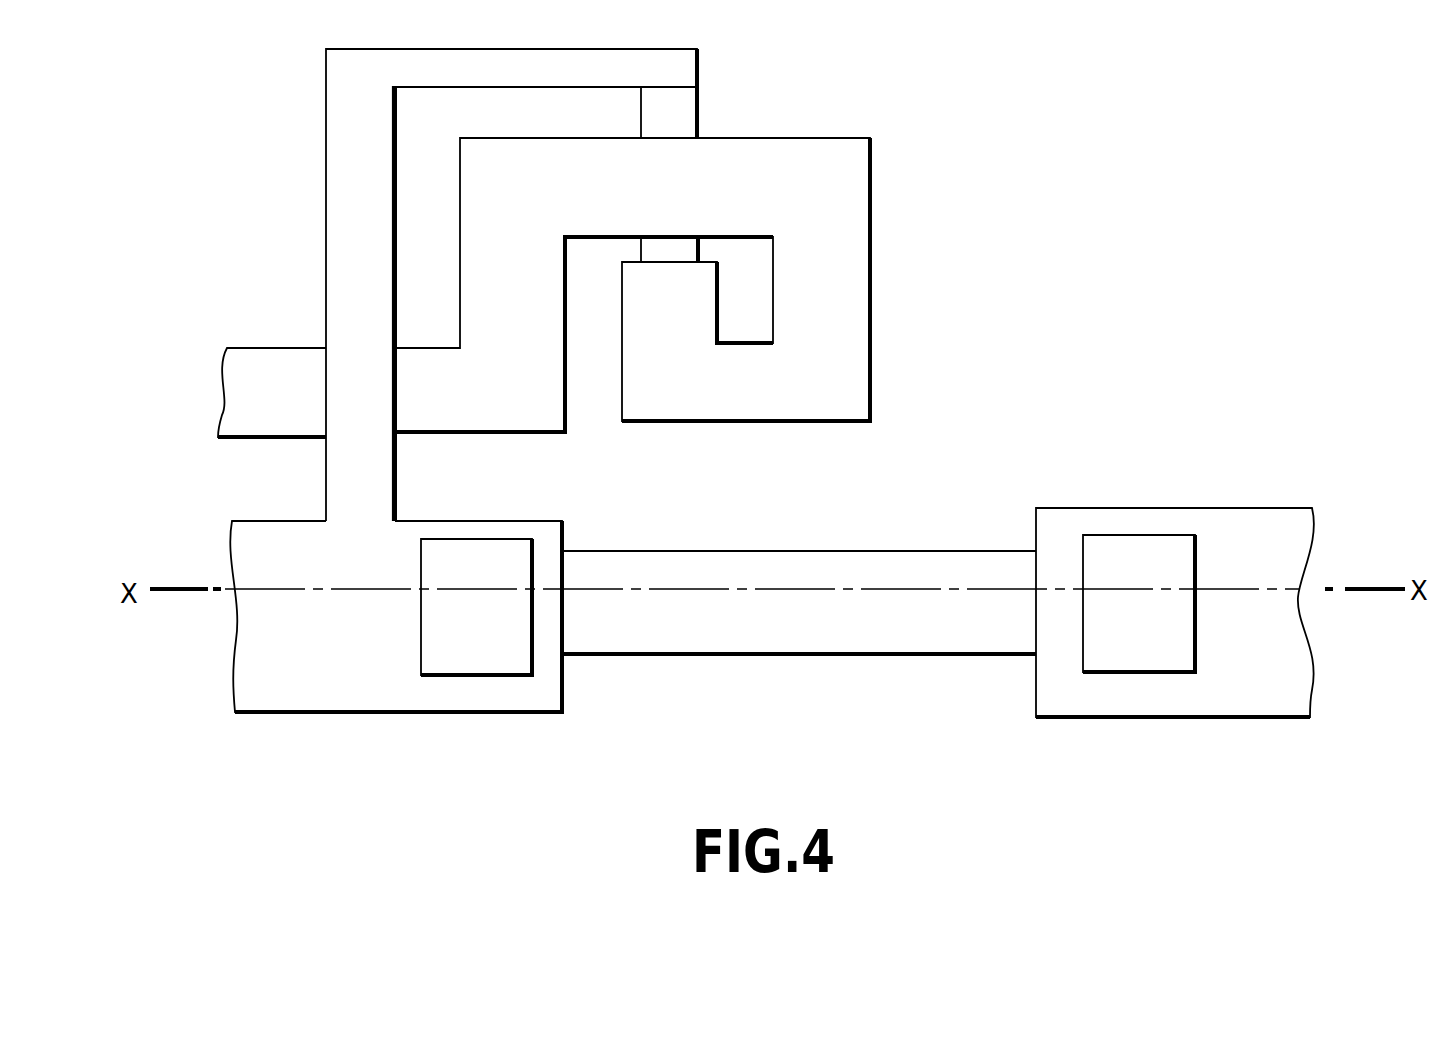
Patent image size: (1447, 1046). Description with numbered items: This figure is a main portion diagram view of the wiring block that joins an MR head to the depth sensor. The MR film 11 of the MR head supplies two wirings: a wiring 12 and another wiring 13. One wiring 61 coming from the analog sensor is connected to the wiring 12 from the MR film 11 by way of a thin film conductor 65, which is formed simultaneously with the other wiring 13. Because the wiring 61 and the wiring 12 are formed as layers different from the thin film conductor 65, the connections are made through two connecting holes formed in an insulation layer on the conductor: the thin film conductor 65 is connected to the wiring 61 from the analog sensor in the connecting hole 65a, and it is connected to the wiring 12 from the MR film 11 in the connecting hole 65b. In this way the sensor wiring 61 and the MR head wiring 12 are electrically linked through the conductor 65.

The MR film 11 is at (680, 247).
The wiring 12 is at (345, 237).
The wiring 13 is at (855, 235).
The wiring 61 is at (1227, 680).
The thin film conductor 65 is at (680, 632).
The connecting hole 65a is at (1118, 648).
The connecting hole 65b is at (465, 655).